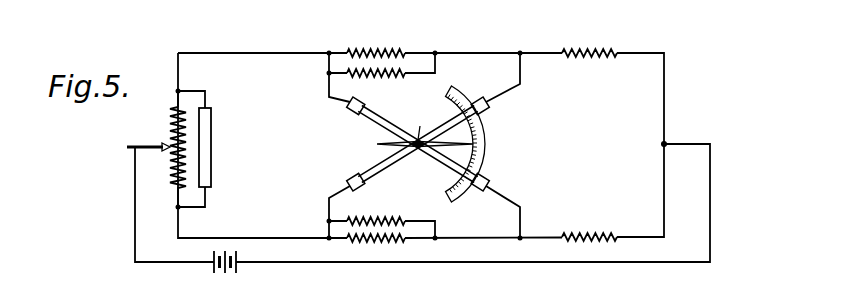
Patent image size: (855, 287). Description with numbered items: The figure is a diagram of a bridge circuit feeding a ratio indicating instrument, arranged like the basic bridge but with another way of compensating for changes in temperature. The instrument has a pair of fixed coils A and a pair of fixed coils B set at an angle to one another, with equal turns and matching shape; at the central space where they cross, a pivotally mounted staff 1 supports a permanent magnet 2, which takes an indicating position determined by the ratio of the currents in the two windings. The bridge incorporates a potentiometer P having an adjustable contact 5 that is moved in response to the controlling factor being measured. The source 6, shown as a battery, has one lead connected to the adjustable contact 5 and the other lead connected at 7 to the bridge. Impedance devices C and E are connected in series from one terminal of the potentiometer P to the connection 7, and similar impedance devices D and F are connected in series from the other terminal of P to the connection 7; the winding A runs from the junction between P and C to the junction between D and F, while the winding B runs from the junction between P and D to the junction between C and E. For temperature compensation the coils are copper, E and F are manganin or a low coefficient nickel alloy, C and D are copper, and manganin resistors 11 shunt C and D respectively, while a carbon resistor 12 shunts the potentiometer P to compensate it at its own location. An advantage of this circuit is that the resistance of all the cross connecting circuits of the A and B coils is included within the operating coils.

The staff 1 is at (422, 124).
The permanent magnet 2 is at (378, 144).
The adjustable contact 5 is at (161, 145).
The source 6 is at (215, 268).
The connection 7 is at (656, 146).
The manganin resistors 11 is at (392, 80).
The carbon resistor 12 is at (212, 143).
The fixed coils A is at (362, 112).
The fixed coils B is at (376, 169).
The impedance device C is at (376, 43).
The impedance device D is at (376, 248).
The impedance device E is at (589, 43).
The impedance device F is at (589, 223).
The potentiometer P is at (169, 149).